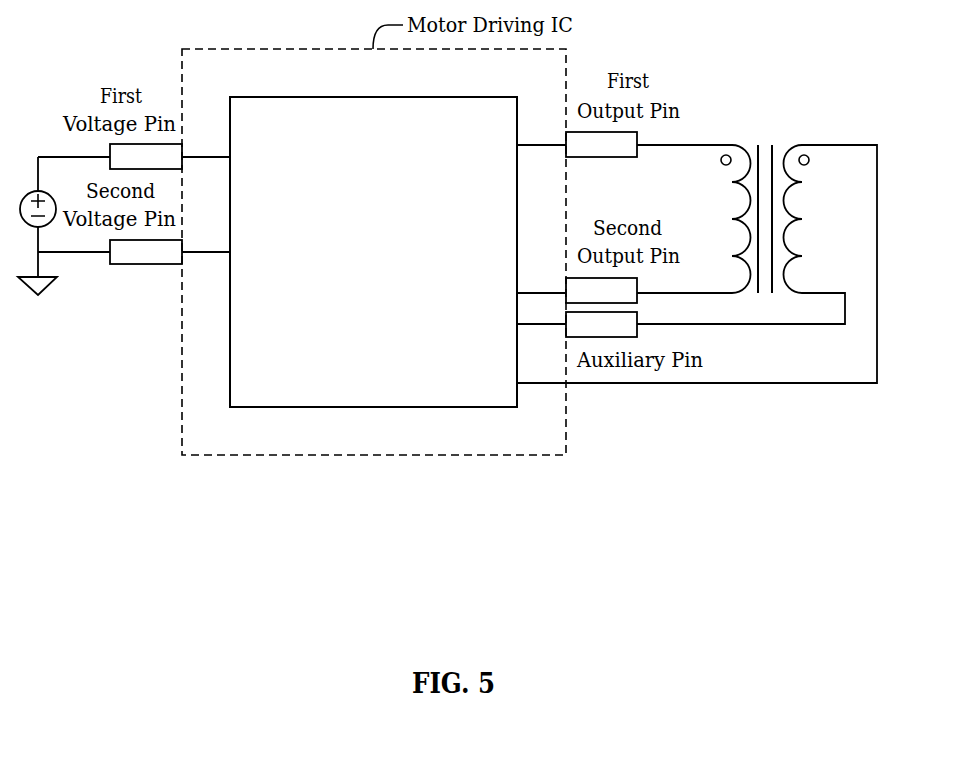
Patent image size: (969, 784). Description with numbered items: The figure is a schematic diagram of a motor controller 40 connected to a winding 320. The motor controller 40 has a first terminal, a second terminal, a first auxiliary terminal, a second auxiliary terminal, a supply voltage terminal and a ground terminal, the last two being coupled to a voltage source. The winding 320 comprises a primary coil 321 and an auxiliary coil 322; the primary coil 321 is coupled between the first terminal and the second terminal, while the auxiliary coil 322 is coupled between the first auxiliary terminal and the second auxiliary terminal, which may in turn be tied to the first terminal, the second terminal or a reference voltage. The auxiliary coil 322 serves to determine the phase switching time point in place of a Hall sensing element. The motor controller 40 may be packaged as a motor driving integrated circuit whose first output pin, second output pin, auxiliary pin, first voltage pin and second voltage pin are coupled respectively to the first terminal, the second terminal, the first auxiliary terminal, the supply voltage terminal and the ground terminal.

The motor controller 40 is at (373, 97).
The winding 320 is at (780, 170).
The primary coil 321 is at (708, 145).
The auxiliary coil 322 is at (852, 145).